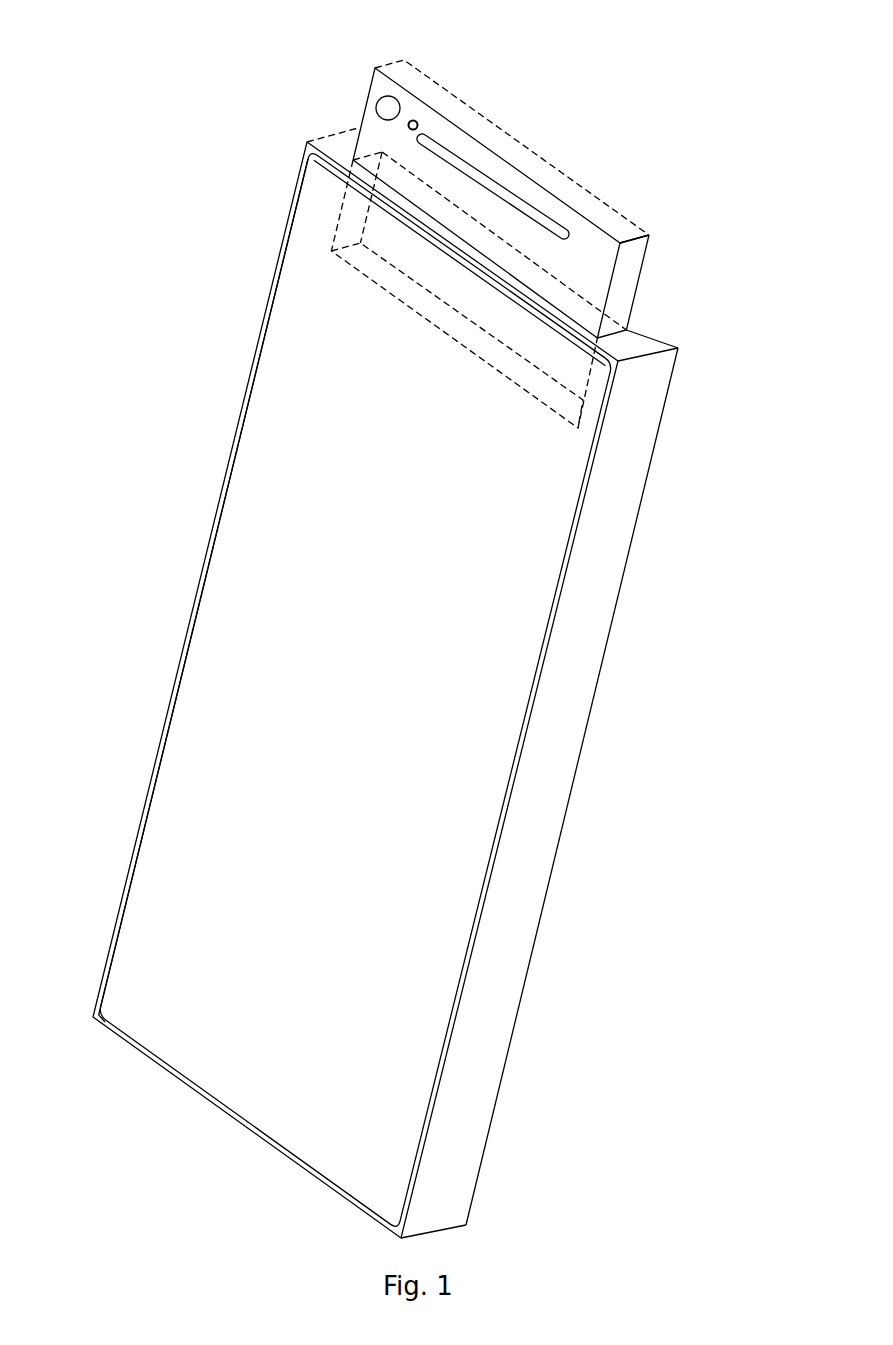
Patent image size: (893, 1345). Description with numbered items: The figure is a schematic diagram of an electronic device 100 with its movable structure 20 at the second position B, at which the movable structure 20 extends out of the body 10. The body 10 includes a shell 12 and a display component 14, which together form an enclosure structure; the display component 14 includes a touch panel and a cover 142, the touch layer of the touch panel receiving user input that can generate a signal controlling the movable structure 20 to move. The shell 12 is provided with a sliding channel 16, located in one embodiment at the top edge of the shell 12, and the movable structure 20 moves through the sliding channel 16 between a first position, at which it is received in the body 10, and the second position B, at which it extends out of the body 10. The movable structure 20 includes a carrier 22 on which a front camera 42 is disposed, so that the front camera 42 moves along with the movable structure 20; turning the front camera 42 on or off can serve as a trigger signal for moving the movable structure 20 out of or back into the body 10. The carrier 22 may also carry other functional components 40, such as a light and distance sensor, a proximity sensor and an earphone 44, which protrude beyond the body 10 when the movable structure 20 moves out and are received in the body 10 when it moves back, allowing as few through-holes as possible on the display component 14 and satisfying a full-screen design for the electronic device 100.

The electronic device 100 is at (131, 290).
The body 10 is at (553, 686).
The shell 12 is at (533, 792).
The display component 14 is at (120, 634).
The cover 142 is at (223, 565).
The sliding channel 16 is at (352, 220).
The movable structure 20 is at (588, 262).
The carrier 22 is at (577, 232).
The functional components 40 is at (415, 122).
The front camera 42 is at (389, 98).
The earphone 44 is at (463, 155).
The second position B is at (665, 237).